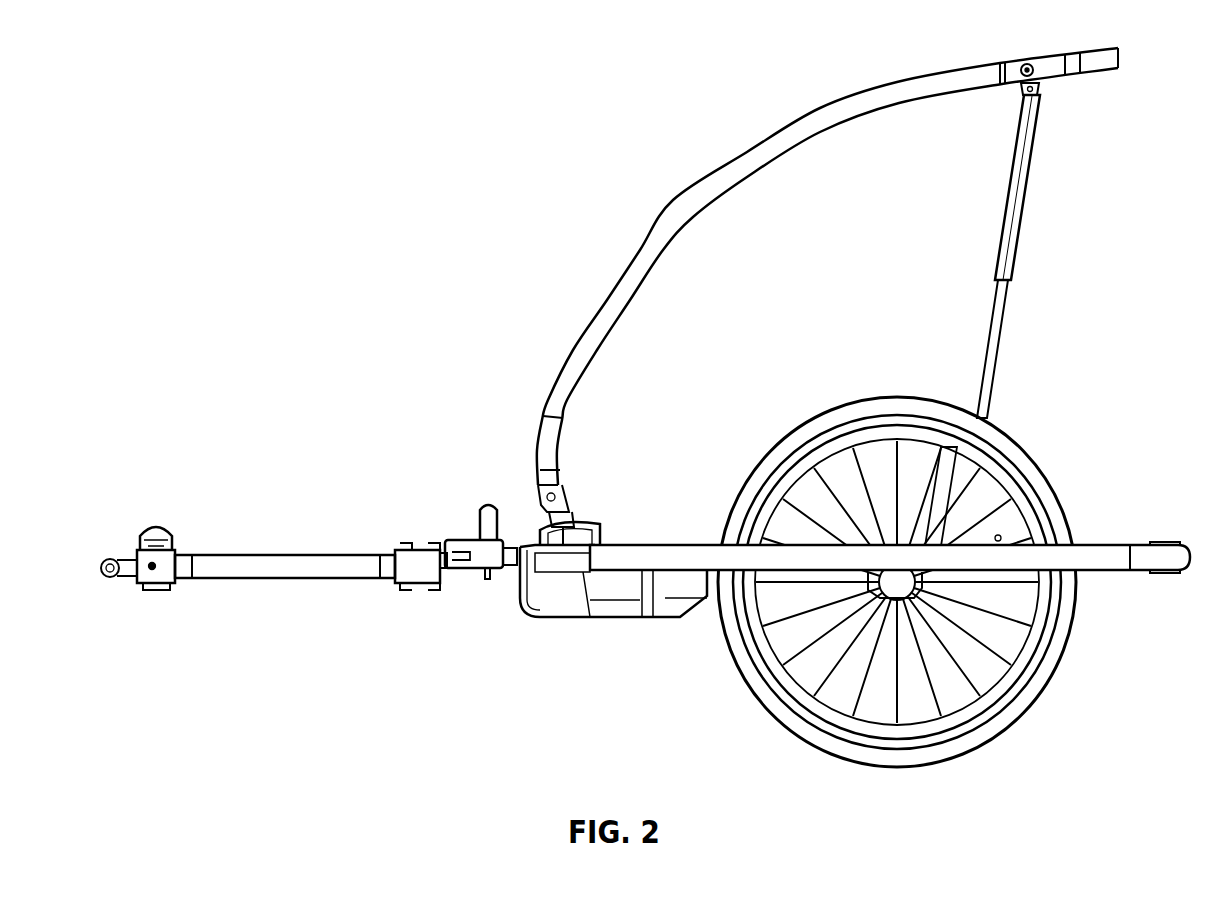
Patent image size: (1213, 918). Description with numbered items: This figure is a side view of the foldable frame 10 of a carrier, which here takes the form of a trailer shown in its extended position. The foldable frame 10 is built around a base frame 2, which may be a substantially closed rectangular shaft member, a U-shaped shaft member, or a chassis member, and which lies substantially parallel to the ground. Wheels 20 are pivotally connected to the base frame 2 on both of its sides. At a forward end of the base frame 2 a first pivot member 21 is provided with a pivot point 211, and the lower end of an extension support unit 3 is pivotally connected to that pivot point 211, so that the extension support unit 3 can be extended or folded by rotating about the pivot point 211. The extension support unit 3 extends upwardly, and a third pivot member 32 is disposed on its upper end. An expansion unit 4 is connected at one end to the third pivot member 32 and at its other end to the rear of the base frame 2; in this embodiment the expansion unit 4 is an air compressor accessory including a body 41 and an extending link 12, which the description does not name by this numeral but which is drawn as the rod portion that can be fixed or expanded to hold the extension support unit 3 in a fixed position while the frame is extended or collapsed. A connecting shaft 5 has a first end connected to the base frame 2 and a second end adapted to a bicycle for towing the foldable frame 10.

The foldable frame 10 is at (557, 208).
The base frame 2 is at (1133, 546).
The wheels 20 is at (1022, 716).
The first pivot member 21 is at (592, 530).
The pivot point 211 is at (543, 490).
The extension support unit 3 is at (748, 155).
The third pivot member 32 is at (1040, 88).
The expansion unit 4 is at (1045, 288).
The body 41 is at (1014, 186).
The strut rod 12 is at (994, 340).
The connecting shaft 5 is at (275, 576).